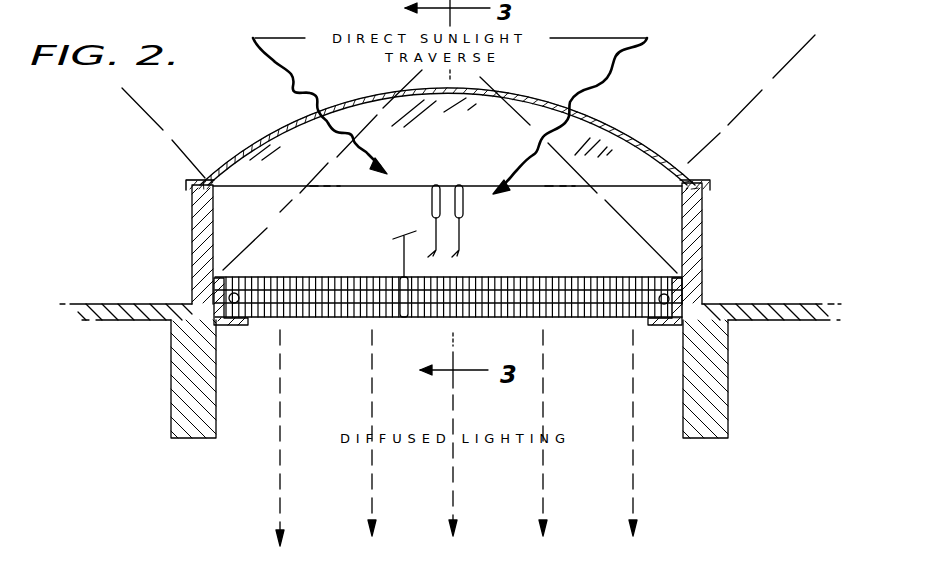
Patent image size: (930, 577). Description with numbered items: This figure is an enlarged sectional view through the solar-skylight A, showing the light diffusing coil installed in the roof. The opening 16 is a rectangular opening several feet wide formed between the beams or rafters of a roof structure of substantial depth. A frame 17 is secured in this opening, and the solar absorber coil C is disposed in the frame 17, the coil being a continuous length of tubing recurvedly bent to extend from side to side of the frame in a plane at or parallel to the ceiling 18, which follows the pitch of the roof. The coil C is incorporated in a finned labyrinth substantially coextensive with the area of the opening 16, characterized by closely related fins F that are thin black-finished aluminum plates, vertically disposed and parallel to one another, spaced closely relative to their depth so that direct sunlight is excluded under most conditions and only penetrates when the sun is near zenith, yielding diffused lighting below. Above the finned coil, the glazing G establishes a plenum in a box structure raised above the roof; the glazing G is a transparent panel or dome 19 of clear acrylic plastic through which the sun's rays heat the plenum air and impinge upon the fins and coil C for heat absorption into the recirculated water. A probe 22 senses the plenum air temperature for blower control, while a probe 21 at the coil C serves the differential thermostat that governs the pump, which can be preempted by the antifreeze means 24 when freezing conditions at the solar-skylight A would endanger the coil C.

The opening 16 is at (220, 230).
The frame 17 is at (238, 325).
The ceiling 18 is at (112, 322).
The transparent panel or dome 19 is at (548, 98).
The probe 21 is at (405, 318).
The probe 22 is at (432, 203).
The antifreeze means 24 is at (463, 203).
The solar-skylight A is at (150, 203).
The solar absorber coil C is at (662, 299).
The fins F is at (336, 314).
The glazing G is at (640, 139).